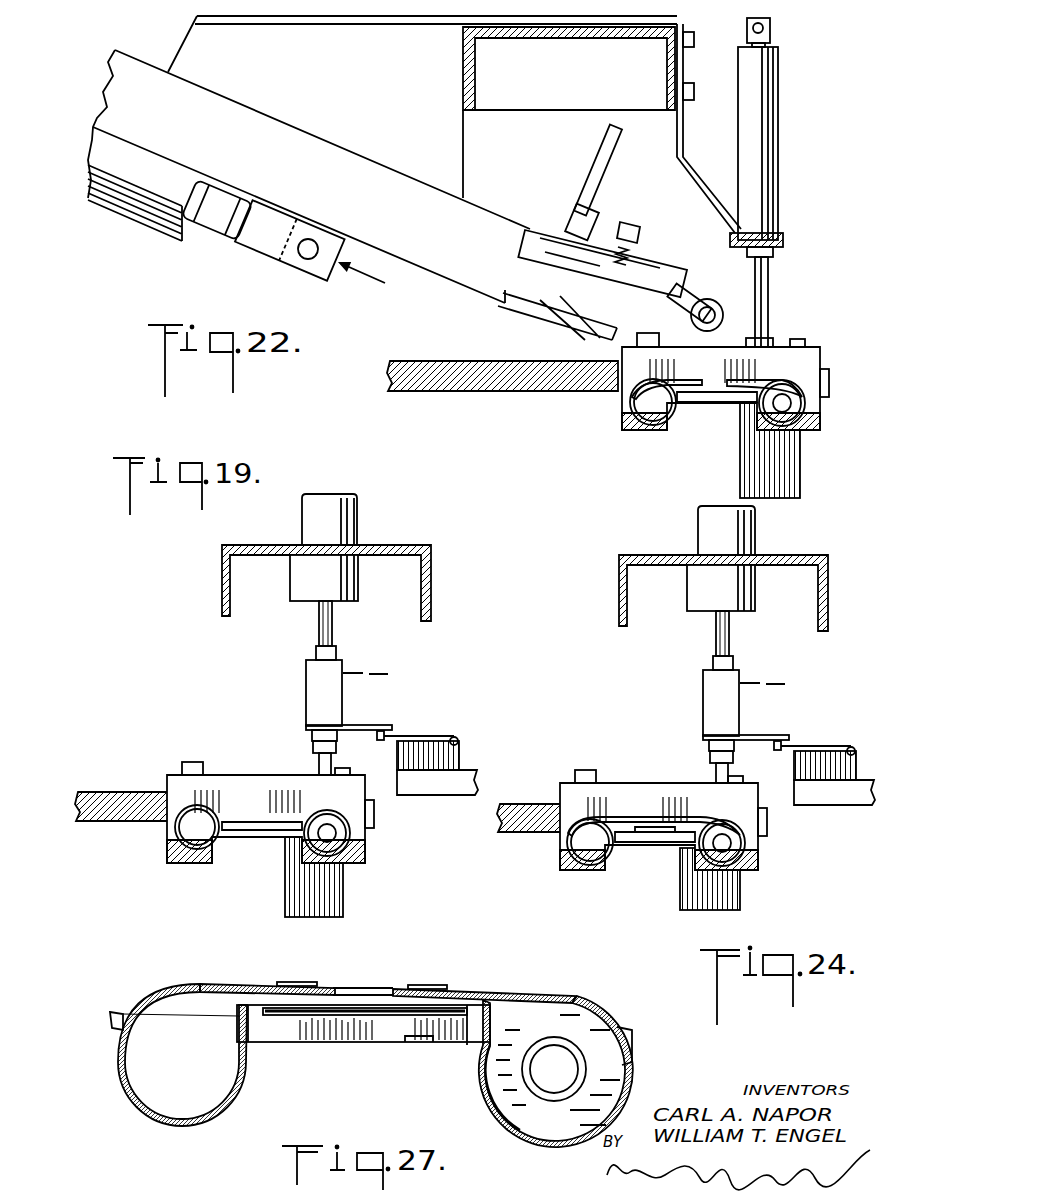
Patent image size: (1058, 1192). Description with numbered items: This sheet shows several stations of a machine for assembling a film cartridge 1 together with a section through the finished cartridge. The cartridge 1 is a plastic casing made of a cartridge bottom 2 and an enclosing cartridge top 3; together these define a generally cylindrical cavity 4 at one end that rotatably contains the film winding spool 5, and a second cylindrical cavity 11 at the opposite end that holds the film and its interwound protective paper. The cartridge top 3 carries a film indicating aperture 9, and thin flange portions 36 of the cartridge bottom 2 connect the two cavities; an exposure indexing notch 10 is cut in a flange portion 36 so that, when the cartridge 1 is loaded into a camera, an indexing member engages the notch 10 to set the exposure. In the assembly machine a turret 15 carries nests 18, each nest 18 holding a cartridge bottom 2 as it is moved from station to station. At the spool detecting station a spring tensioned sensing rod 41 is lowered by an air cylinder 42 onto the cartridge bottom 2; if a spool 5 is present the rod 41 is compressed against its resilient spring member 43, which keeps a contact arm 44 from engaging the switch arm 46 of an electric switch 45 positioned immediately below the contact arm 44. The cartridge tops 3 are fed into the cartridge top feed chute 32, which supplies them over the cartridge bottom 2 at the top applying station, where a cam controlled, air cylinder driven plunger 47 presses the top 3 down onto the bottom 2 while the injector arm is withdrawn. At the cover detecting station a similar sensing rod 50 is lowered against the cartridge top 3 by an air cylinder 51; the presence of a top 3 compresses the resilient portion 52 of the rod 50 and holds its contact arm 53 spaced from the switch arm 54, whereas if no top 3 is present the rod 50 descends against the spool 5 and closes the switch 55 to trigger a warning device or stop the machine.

In FIG. 24, the film cartridge 1 is at (654, 790).
In FIG. 27, the film cartridge 1 is at (487, 975).
In FIG. 22, the cartridge bottom 2 is at (656, 427).
In FIG. 19, the cartridge bottom 2 is at (206, 813).
In FIG. 24, the cartridge bottom 2 is at (590, 842).
In FIG. 27, the cartridge bottom 2 is at (480, 1078).
In FIG. 22, the cartridge top 3 is at (717, 374).
In FIG. 24, the cartridge top 3 is at (655, 798).
In FIG. 27, the cartridge top 3 is at (395, 992).
In FIG. 27, the cylindrical cavity 4 is at (620, 1065).
In FIG. 27, the film winding spool 5 is at (583, 1027).
In FIG. 27, the film indicating aperture 9 is at (335, 990).
In FIG. 27, the exposure indexing notch 10 is at (415, 1042).
In FIG. 27, the cylindrical cavity 11 is at (133, 1098).
In FIG. 22, the turret 15 is at (518, 365).
In FIG. 19, the turret 15 is at (98, 796).
In FIG. 24, the turret 15 is at (513, 807).
In FIG. 22, the nest 18 is at (747, 415).
In FIG. 19, the nest 18 is at (290, 839).
In FIG. 24, the nest 18 is at (689, 840).
In FIG. 22, the cartridge top feed chute 32 is at (402, 188).
In FIG. 27, the flange portion 36 is at (443, 1040).
In FIG. 19, the sensing rod 41 is at (299, 773).
In FIG. 19, the air cylinder 42 is at (357, 519).
In FIG. 19, the resilient spring member 43 is at (320, 693).
In FIG. 19, the contact arm 44 is at (401, 712).
In FIG. 19, the electric switch 45 is at (447, 750).
In FIG. 19, the switch arm 46 is at (424, 710).
In FIG. 22, the plunger 47 is at (763, 315).
In FIG. 24, the sensing rod 50 is at (689, 768).
In FIG. 24, the air cylinder 51 is at (755, 530).
In FIG. 24, the resilient portion 52 is at (718, 703).
In FIG. 24, the contact arm 53 is at (816, 719).
In FIG. 24, the switch arm 54 is at (771, 762).
In FIG. 24, the switch 55 is at (834, 759).